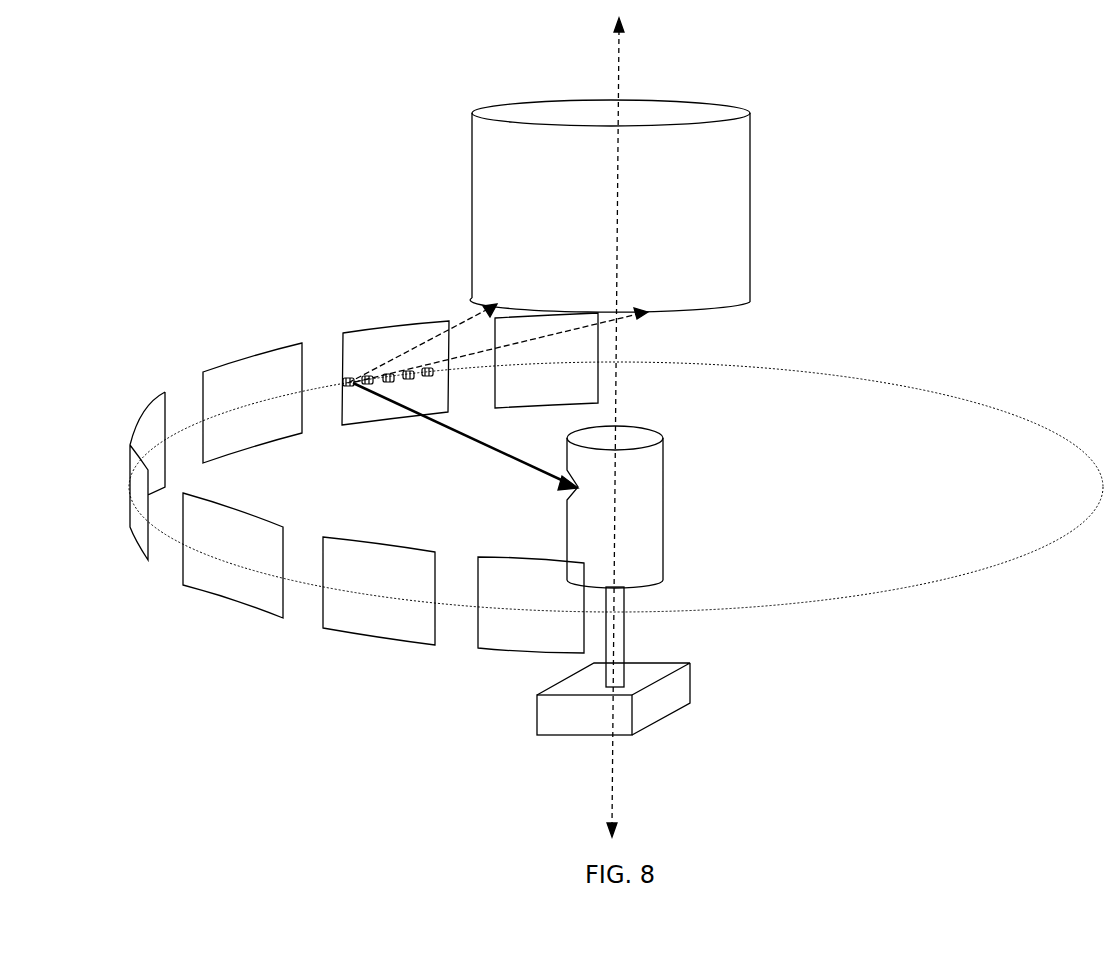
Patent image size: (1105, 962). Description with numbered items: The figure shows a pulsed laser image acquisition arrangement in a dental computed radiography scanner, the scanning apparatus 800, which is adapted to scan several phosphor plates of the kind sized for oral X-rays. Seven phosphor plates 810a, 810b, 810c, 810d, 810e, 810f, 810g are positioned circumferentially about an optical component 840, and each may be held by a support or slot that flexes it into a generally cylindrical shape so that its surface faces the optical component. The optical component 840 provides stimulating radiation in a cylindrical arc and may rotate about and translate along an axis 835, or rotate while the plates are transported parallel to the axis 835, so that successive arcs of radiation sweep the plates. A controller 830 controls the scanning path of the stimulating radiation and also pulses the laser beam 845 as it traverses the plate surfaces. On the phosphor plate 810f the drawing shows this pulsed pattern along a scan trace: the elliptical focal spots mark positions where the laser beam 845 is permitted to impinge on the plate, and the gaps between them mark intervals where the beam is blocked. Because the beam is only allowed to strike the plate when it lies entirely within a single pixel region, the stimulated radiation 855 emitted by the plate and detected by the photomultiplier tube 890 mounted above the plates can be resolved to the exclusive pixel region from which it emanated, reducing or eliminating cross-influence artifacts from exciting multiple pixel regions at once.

The scanning apparatus 800 is at (121, 104).
The phosphor plate 810a is at (525, 650).
The phosphor plate 810b is at (360, 640).
The phosphor plate 810c is at (217, 598).
The phosphor plate 810d is at (132, 477).
The phosphor plate 810e is at (248, 353).
The phosphor plate 810f is at (410, 323).
The phosphor plate 810g is at (598, 372).
The controller 830 is at (667, 702).
The axis 835 is at (620, 78).
The optical component 840 is at (662, 488).
The laser beam 845 is at (458, 437).
The stimulated radiation 855 is at (467, 322).
The photomultiplier tube 890 is at (752, 160).